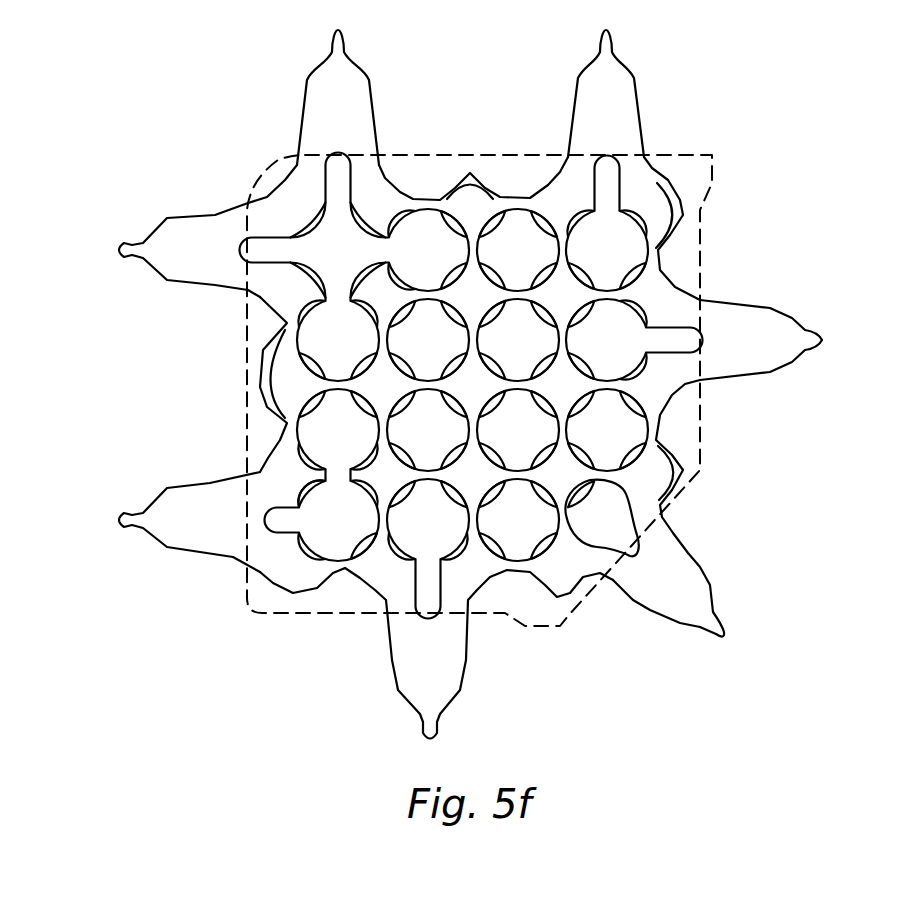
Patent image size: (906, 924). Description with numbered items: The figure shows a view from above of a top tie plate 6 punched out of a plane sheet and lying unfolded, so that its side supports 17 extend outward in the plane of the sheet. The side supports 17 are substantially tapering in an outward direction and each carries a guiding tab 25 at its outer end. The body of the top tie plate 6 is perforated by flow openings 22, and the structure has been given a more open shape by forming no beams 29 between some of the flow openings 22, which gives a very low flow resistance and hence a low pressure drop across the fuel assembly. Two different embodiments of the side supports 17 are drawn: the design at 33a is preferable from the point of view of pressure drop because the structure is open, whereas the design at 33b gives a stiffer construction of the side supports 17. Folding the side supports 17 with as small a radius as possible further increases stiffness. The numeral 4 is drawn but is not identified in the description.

The lateral support arm 4 is at (673, 270).
The top tie plate 6 is at (518, 197).
The side support 17 is at (690, 580).
The flow opening 22 is at (522, 540).
The guiding tab 25 is at (720, 637).
The beam 29 is at (603, 473).
The side support design 33a is at (230, 250).
The side support design 33b is at (258, 522).